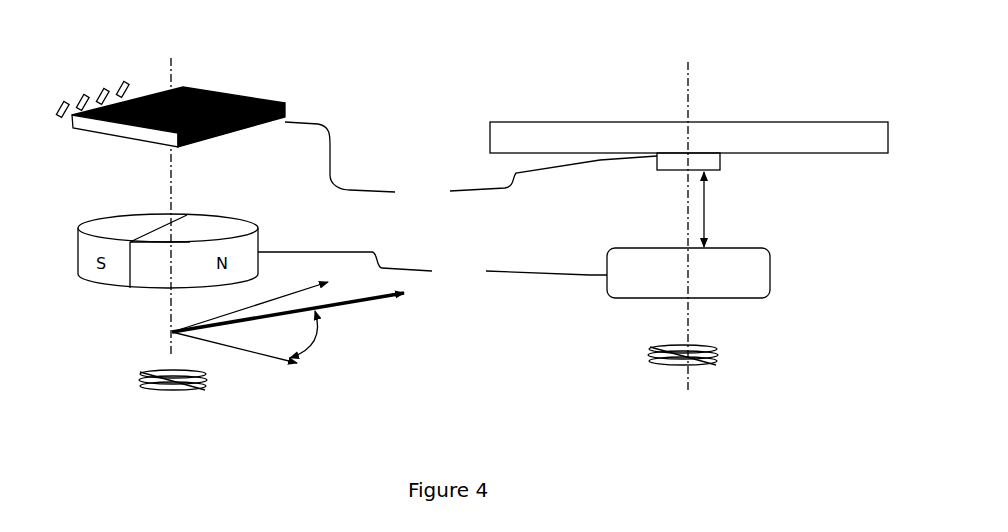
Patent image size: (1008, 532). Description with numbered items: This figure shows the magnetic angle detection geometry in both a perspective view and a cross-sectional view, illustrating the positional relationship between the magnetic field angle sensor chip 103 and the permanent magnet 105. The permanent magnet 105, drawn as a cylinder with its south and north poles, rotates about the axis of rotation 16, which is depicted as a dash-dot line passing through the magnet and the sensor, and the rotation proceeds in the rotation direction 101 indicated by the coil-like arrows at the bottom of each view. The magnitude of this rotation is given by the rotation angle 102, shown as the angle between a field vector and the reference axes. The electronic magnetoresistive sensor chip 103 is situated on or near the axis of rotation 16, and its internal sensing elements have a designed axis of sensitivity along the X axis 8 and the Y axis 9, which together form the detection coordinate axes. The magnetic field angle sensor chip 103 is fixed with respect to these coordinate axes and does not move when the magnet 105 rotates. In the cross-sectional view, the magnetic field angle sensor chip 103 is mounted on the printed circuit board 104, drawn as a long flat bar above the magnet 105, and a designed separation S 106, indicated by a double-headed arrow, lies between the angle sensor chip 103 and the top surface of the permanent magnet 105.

The axis of rotation 16 is at (430, 202).
The X axis 8 is at (255, 353).
The Y axis 9 is at (250, 299).
The rotation direction 101 is at (397, 368).
The rotation angle 102 is at (289, 325).
The magnetic field angle sensor chip 103 is at (471, 163).
The printed circuit board 104 is at (613, 122).
The permanent magnet 105 is at (514, 273).
The separation S 106 is at (710, 203).